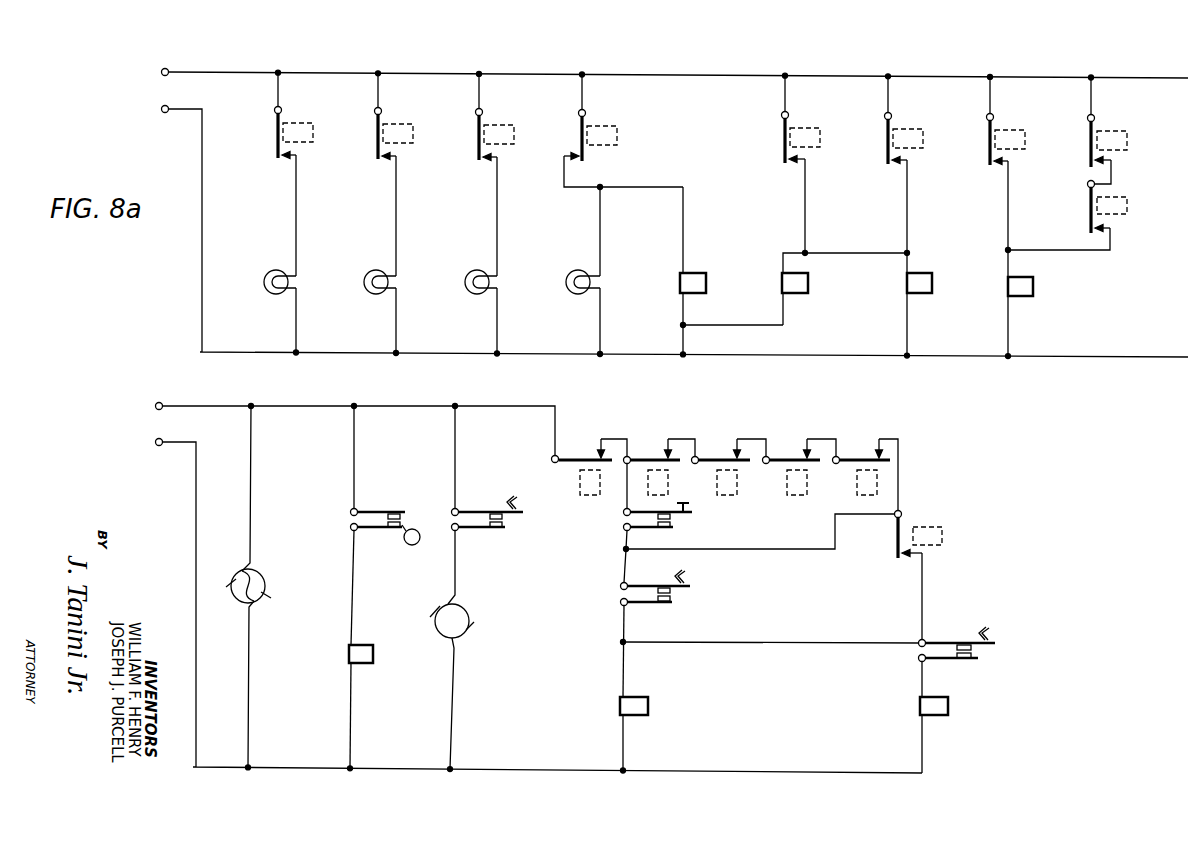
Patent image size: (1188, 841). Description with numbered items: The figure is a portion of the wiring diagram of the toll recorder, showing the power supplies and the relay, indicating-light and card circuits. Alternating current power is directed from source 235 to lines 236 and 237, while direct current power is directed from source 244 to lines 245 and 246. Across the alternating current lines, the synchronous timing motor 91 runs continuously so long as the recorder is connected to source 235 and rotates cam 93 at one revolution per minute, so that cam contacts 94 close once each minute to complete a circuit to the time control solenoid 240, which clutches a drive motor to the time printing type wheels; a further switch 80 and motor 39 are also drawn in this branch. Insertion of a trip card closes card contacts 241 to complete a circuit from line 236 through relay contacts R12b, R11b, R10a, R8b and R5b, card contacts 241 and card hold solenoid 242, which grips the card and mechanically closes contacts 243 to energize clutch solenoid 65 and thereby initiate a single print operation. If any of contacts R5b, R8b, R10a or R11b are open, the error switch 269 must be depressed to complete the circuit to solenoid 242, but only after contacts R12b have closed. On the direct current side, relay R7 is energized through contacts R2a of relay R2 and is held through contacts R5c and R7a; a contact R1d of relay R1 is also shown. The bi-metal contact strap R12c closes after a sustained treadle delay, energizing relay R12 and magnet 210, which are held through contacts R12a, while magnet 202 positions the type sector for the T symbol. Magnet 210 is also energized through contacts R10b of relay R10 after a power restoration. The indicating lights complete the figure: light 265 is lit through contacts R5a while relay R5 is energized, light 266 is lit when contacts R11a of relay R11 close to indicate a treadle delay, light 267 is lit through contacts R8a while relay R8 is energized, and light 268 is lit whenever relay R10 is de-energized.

The direct current source 244 is at (147, 62).
The direct current line 245 is at (230, 72).
The direct current line 246 is at (240, 352).
The alternating current source 235 is at (147, 396).
The alternating current line 236 is at (310, 407).
The alternating current line 237 is at (208, 769).
The light 265 is at (276, 270).
The light 266 is at (374, 270).
The light 267 is at (475, 270).
The light 268 is at (576, 270).
The magnet 210 is at (680, 290).
The magnet 202 is at (784, 290).
The synchronous timing motor 91 is at (258, 572).
The motor 39 is at (463, 610).
The cam 93 is at (406, 544).
The cam contacts 94 is at (402, 520).
The limit switch 80 is at (508, 527).
The time control solenoid 240 is at (360, 663).
The error switch 269 is at (674, 527).
The card contacts 241 is at (672, 602).
The card hold solenoid 242 is at (634, 715).
The contacts 243 is at (979, 658).
The clutch solenoid 65 is at (934, 715).
The relay R1 coil R1 is at (924, 527).
The relay R1 contact d R1d is at (900, 561).
The relay R2 is at (1006, 130).
The contacts R2a is at (988, 169).
The relay R5 is at (294, 123).
The contacts R5a is at (276, 162).
The contacts R5b is at (860, 456).
The contacts R5c is at (1088, 155).
The relay R7 is at (1127, 205).
The contacts R7a is at (1089, 212).
The relay R8 is at (495, 125).
The contacts R8a is at (477, 164).
The contacts R8b is at (788, 456).
The relay R10 is at (600, 126).
The contacts R10a is at (717, 456).
The contacts R10b is at (584, 164).
The relay R11 is at (394, 124).
The contacts R11a is at (379, 177).
The contacts R11b is at (648, 456).
The relay R12 is at (802, 128).
The contacts R12a is at (786, 180).
The contacts R12b is at (580, 456).
The bi-metal contact strap R12c is at (889, 181).